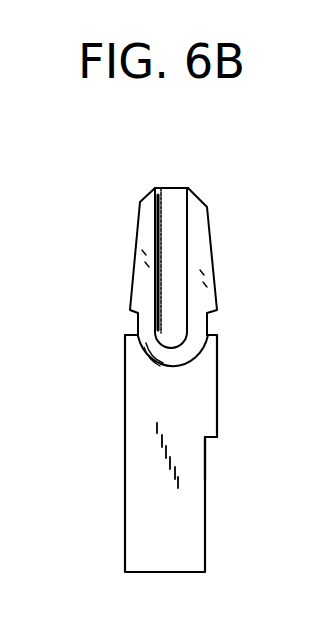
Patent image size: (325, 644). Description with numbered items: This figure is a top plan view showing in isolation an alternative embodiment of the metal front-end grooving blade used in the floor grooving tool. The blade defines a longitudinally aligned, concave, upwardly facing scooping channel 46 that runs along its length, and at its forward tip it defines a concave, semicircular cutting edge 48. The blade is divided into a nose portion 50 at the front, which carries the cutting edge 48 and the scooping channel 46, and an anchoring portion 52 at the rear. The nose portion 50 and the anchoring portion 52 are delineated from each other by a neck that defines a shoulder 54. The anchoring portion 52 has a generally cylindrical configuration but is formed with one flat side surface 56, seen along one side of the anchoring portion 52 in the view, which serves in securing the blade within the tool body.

The scooping channel 46 is at (175, 246).
The cutting edge 48 is at (172, 186).
The nose portion 50 is at (157, 243).
The anchoring portion 52 is at (161, 434).
The shoulder 54 is at (216, 334).
The flat side surface 56 is at (206, 484).